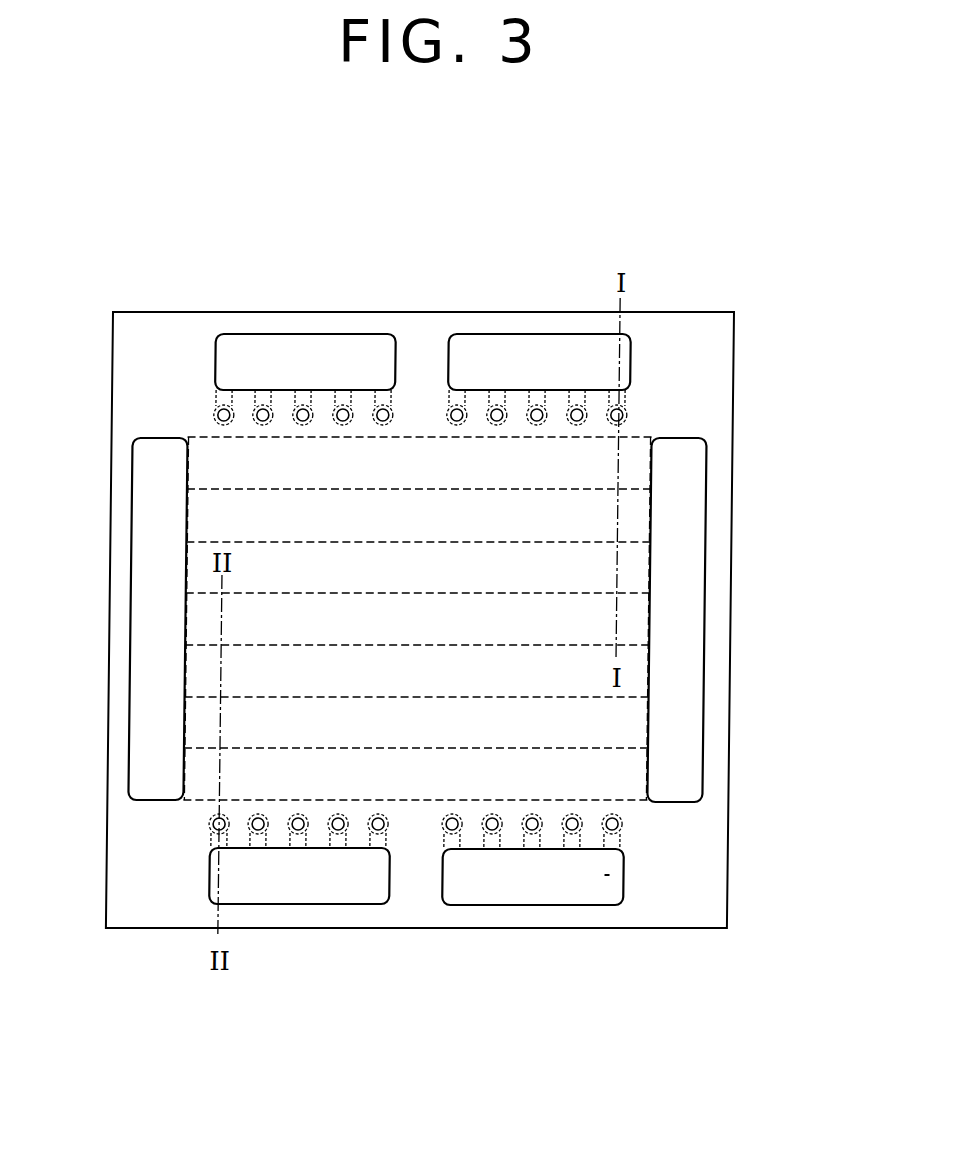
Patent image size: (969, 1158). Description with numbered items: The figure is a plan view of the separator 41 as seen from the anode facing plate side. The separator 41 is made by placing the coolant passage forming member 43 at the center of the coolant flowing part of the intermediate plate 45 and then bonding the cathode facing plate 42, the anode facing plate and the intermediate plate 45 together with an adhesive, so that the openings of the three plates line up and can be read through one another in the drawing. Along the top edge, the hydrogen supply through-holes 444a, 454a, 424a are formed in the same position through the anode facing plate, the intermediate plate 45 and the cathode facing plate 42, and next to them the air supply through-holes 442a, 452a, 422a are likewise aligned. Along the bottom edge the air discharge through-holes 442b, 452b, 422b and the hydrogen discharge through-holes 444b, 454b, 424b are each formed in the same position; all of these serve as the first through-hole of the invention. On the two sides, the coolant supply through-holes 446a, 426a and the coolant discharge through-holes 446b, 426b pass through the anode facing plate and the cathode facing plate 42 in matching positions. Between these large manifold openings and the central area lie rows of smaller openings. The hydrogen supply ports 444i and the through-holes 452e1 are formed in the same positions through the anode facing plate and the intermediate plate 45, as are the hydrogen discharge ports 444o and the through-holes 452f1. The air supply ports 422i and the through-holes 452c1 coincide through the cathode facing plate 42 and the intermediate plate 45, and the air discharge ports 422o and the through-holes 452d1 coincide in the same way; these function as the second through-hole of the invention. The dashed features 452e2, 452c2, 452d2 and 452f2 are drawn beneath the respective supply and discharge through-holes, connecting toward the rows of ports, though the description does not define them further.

The separator 41 is at (122, 101).
The intermediate plate 45 is at (425, 312).
The cathode facing plate 42 is at (420, 565).
The coolant passage forming member 43 is at (644, 438).
The hydrogen supply through-hole 444a is at (306, 283).
The hydrogen supply through-hole 454a is at (306, 283).
The hydrogen supply through-hole 424a is at (289, 334).
The air supply through-hole 442a is at (540, 283).
The air supply through-hole 452a is at (540, 283).
The air supply through-hole 422a is at (508, 334).
The air discharge through-hole 442b is at (298, 956).
The air discharge through-hole 452b is at (298, 956).
The air discharge through-hole 422b is at (289, 905).
The hydrogen discharge through-hole 444b is at (531, 957).
The hydrogen discharge through-hole 454b is at (531, 957).
The hydrogen discharge through-hole 424b is at (510, 905).
The coolant supply through-hole 446a is at (97, 738).
The coolant supply through-hole 426a is at (164, 802).
The coolant discharge through-hole 446b is at (738, 738).
The coolant discharge through-hole 426b is at (683, 802).
The hydrogen inlet connecting passages 452e2 is at (214, 393).
The through-hole 452e1 is at (225, 425).
The hydrogen supply port 444i is at (384, 425).
The air inlet connecting passages 452c2 is at (628, 393).
The through-hole 452c1 is at (618, 425).
The air supply port 422i is at (458, 425).
The air outlet connecting passages 452d2 is at (216, 843).
The through-hole 452d1 is at (233, 816).
The air discharge port 422o is at (385, 814).
The hydrogen outlet connecting passages 452f2 is at (631, 845).
The through-hole 452f1 is at (619, 813).
The hydrogen discharge port 444o is at (458, 815).